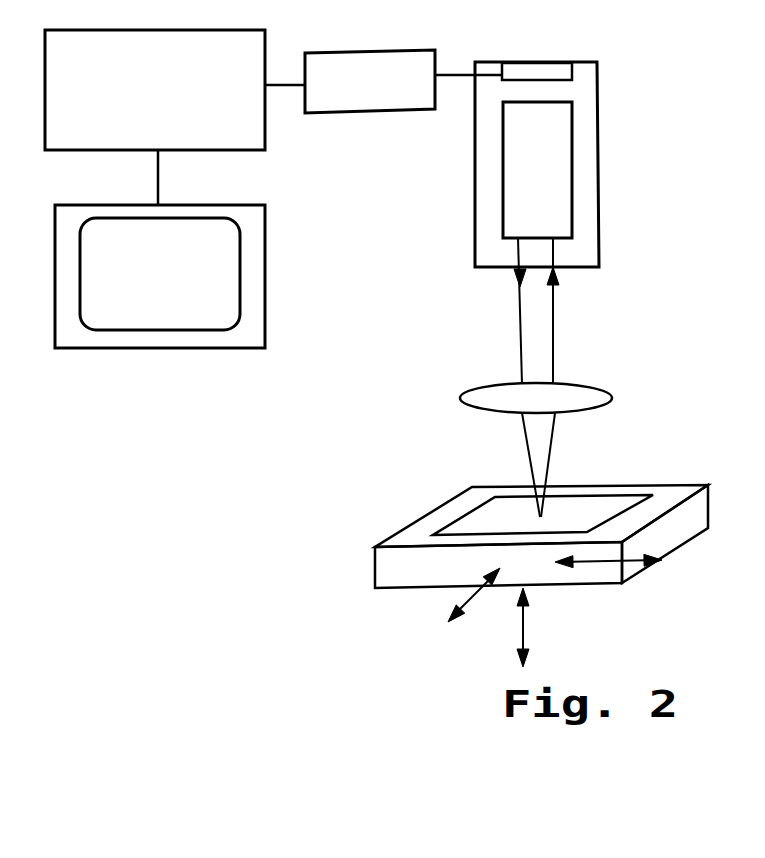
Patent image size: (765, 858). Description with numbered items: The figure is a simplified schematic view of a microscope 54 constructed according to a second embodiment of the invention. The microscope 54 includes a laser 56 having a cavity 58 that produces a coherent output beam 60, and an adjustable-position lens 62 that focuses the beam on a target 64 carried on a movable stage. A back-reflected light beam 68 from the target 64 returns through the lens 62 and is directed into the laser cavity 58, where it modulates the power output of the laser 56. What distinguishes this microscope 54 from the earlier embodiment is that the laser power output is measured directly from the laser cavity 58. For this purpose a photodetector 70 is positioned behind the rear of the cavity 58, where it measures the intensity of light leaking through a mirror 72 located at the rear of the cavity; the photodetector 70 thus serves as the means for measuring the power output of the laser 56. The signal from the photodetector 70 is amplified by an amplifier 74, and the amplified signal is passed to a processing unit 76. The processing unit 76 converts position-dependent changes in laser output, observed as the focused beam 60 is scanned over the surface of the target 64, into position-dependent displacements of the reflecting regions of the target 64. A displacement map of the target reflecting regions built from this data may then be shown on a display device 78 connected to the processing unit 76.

The microscope 54 is at (381, 334).
The laser 56 is at (598, 202).
The cavity 58 is at (570, 130).
The coherent output beam 60 is at (522, 312).
The adjustable-position lens 62 is at (608, 393).
The target 64 is at (502, 517).
The back-reflected light beam 68 is at (558, 332).
The photodetector 70 is at (525, 72).
The mirror 72 is at (530, 103).
The amplifier 74 is at (368, 98).
The processing unit 76 is at (127, 106).
The display device 78 is at (265, 263).